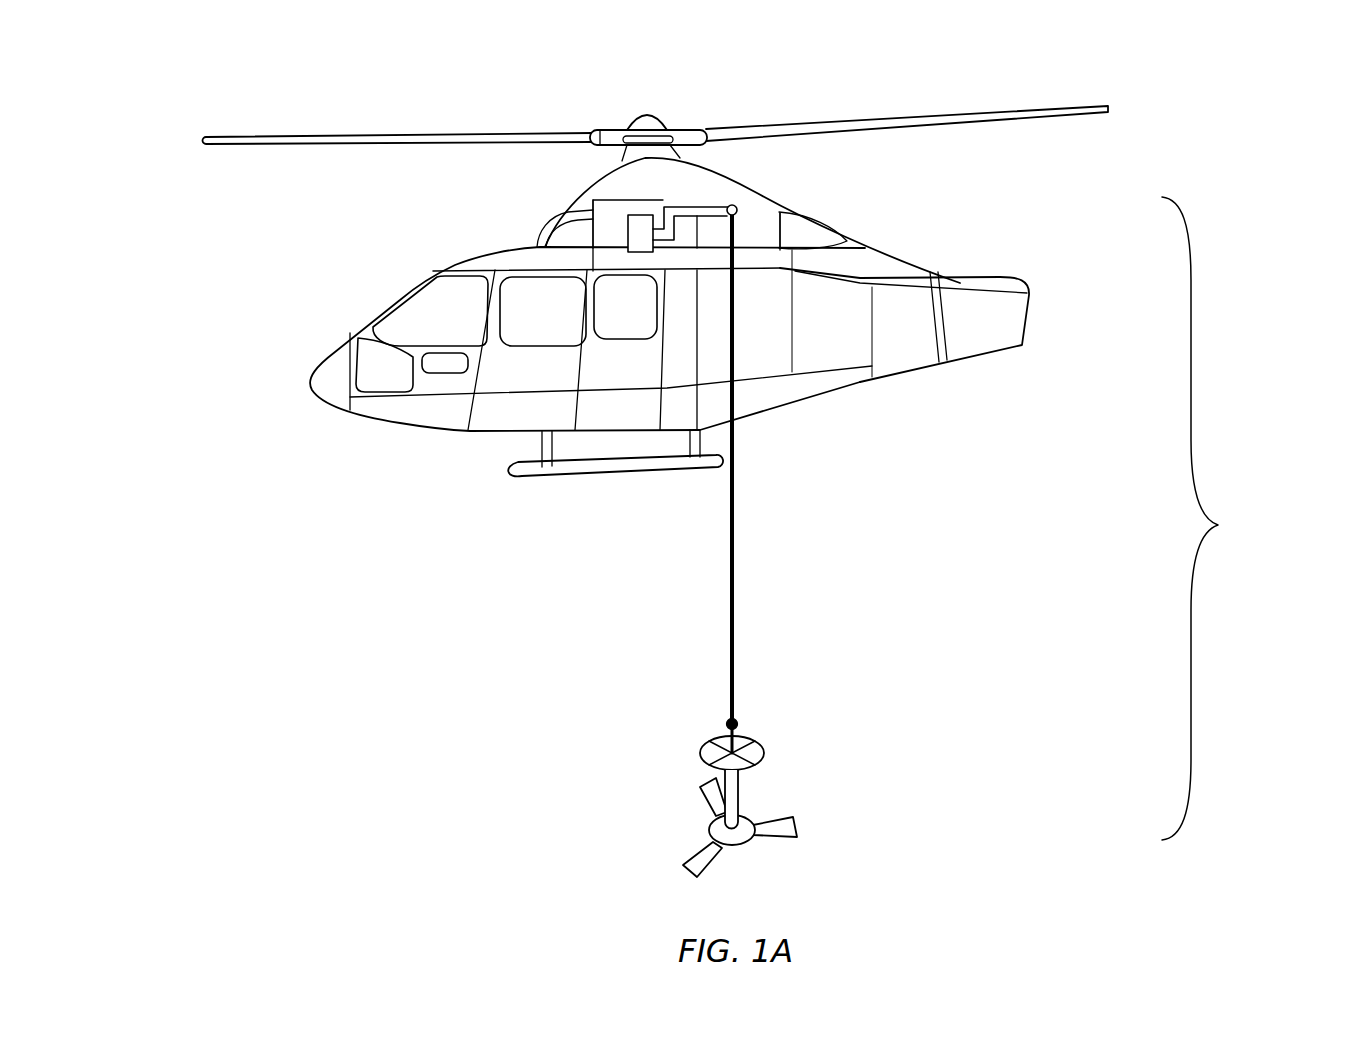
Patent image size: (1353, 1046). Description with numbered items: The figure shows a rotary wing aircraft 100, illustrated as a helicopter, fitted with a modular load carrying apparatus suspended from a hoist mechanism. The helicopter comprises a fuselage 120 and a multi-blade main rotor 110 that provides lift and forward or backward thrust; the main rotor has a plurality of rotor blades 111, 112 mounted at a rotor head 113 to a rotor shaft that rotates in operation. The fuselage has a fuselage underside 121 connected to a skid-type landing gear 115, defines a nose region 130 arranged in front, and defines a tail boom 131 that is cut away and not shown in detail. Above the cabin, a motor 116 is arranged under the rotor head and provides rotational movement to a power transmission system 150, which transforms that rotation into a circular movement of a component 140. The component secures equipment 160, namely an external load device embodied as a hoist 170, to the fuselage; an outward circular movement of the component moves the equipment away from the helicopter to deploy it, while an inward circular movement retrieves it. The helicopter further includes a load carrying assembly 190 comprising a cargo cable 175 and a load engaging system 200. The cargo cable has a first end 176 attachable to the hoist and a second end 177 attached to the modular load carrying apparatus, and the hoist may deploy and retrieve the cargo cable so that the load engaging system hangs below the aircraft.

The rotary wing aircraft 100 is at (393, 91).
The multi-blade main rotor 110 is at (1069, 89).
The rotor blade 111 is at (300, 137).
The rotor blade 112 is at (913, 118).
The rotor head 113 is at (643, 110).
The landing gear 115 is at (611, 471).
The motor 116 is at (628, 232).
The fuselage 120 is at (773, 313).
The fuselage underside 121 is at (516, 433).
The nose region 130 is at (304, 372).
The tail boom 131 is at (992, 328).
The component 140 is at (706, 202).
The power transmission system 150 is at (656, 199).
The equipment 160 is at (741, 204).
The hoist 170 is at (745, 219).
The cargo cable 175 is at (736, 663).
The first end 176 is at (707, 237).
The second end 177 is at (740, 713).
The load carrying assembly 190 is at (1217, 518).
The load engaging system 200 is at (704, 726).